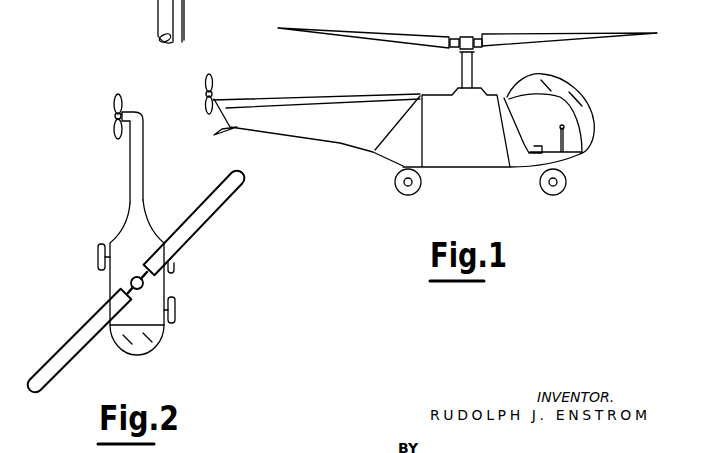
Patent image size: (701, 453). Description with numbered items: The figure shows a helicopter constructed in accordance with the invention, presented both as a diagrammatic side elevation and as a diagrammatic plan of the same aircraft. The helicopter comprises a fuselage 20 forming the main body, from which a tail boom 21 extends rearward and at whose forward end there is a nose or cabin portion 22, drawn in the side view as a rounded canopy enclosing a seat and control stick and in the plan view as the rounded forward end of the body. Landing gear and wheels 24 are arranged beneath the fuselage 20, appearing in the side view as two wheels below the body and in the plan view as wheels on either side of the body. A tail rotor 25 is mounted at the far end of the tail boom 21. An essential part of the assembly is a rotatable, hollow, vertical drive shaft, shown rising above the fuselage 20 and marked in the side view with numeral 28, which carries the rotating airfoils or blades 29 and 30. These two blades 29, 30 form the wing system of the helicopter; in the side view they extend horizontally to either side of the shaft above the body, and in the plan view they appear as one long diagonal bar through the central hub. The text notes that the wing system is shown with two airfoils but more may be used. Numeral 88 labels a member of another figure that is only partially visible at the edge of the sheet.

In FIG. 1, the fuselage 20 is at (462, 163).
In FIG. 2, the fuselage 20 is at (163, 285).
In FIG. 1, the tail boom 21 is at (272, 120).
In FIG. 2, the tail boom 21 is at (144, 166).
In FIG. 1, the nose or cabin portion 22 is at (577, 157).
In FIG. 2, the nose or cabin portion 22 is at (160, 347).
In FIG. 1, the landing gear and wheels 24 is at (405, 194).
In FIG. 2, the landing gear and wheels 24 is at (98, 255).
In FIG. 1, the tail rotor 25 is at (214, 80).
In FIG. 2, the tail rotor 25 is at (116, 99).
In FIG. 1, the rotor mast 28 is at (474, 68).
In FIG. 1, the rotating airfoil or blade 29 is at (575, 38).
In FIG. 2, the rotating airfoil or blade 29 is at (57, 350).
In FIG. 1, the rotating airfoil or blade 30 is at (380, 36).
In FIG. 2, the rotating airfoil or blade 30 is at (222, 207).
In FIG. 1, the member 88 is at (184, 12).